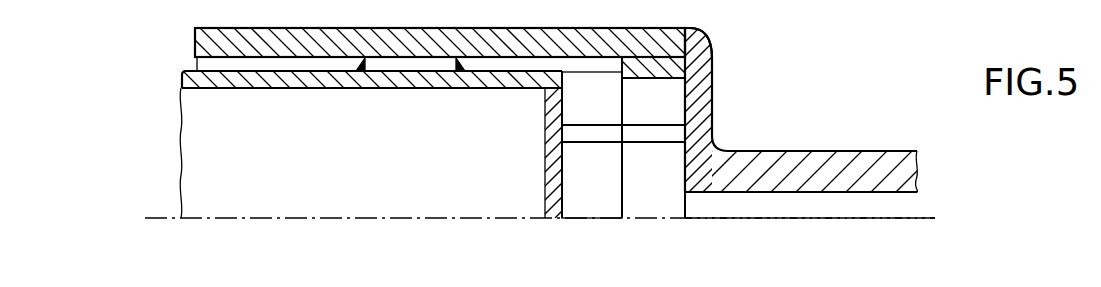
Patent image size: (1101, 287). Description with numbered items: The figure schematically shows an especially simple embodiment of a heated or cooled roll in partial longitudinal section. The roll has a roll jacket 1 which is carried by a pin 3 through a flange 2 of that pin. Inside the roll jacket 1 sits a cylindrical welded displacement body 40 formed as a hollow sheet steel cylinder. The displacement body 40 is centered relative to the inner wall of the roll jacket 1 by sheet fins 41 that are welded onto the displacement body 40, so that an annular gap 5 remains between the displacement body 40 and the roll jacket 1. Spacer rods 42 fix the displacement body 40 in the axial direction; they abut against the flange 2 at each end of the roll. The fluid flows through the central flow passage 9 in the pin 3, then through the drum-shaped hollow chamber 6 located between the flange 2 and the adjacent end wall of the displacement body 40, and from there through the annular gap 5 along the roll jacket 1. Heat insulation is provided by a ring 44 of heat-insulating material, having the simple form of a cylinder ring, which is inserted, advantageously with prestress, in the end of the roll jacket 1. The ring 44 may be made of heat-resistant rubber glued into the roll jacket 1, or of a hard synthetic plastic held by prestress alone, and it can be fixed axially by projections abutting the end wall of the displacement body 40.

The roll jacket 1 is at (213, 44).
The annular gap 5 is at (251, 62).
The sheet fins 41 is at (392, 62).
The displacement body 40 is at (500, 78).
The hollow chamber 6 is at (600, 106).
The spacer rods 42 is at (598, 135).
The flange 2 is at (705, 115).
The ring 44 is at (716, 53).
The pin 3 is at (812, 160).
The central flow passage 9 is at (792, 202).